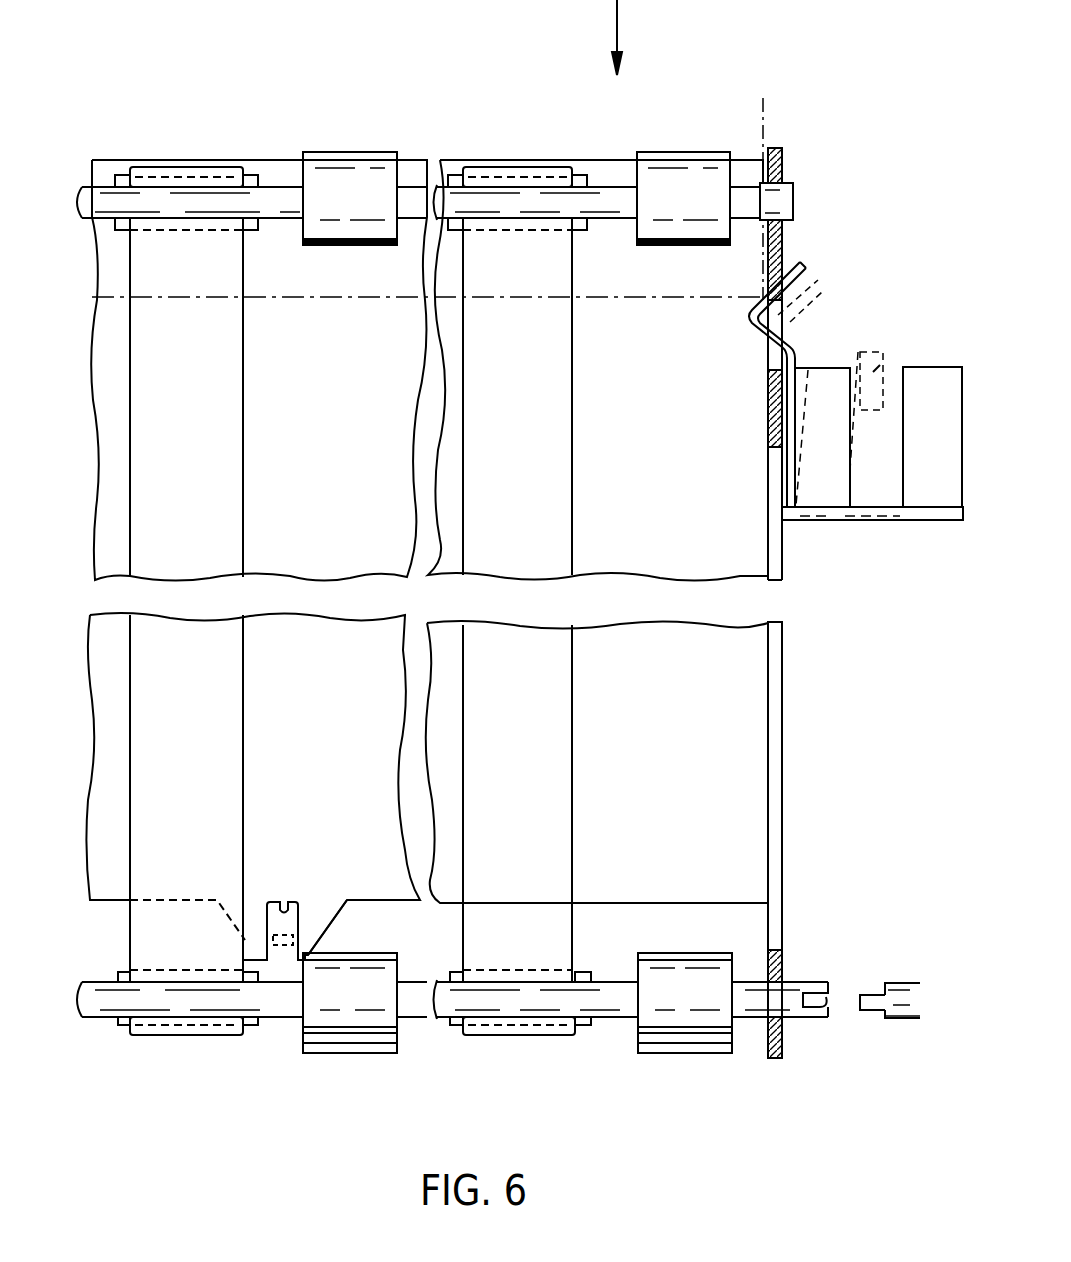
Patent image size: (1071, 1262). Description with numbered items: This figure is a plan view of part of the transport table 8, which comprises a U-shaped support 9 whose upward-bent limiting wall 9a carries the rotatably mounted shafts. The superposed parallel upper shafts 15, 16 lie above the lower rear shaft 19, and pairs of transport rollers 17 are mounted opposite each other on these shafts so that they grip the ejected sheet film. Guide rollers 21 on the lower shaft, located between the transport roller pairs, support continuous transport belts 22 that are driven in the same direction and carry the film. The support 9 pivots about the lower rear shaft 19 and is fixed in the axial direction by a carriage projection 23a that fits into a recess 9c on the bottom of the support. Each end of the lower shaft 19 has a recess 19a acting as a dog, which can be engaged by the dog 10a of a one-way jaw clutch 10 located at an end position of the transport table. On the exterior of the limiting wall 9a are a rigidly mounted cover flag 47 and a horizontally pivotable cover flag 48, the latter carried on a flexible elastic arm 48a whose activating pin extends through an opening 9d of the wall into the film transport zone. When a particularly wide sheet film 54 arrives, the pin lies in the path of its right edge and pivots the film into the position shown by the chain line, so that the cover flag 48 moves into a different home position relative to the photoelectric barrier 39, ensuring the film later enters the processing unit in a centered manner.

The transport table 8 is at (806, 676).
The support 9 is at (755, 830).
The limiting wall 9a is at (777, 745).
The recess 9c is at (287, 902).
The opening 9d is at (772, 267).
The one-way jaw clutch 10 is at (907, 1041).
The dog 10a is at (872, 997).
The upper shaft 15 is at (785, 190).
The upper shaft 16 is at (620, 1003).
The transport roller 17 is at (342, 163).
The lower rear shaft 19 is at (793, 1012).
The recess 19a is at (825, 1003).
The guide roller 21 is at (257, 187).
The transport belt 22 is at (202, 277).
The carriage projection 23a is at (308, 915).
The photoelectric barrier 39 is at (873, 372).
The cover flag 47 is at (950, 375).
The cover flag 48 is at (855, 367).
The flexible elastic arm 48a is at (793, 380).
The sheet film 54 is at (767, 120).